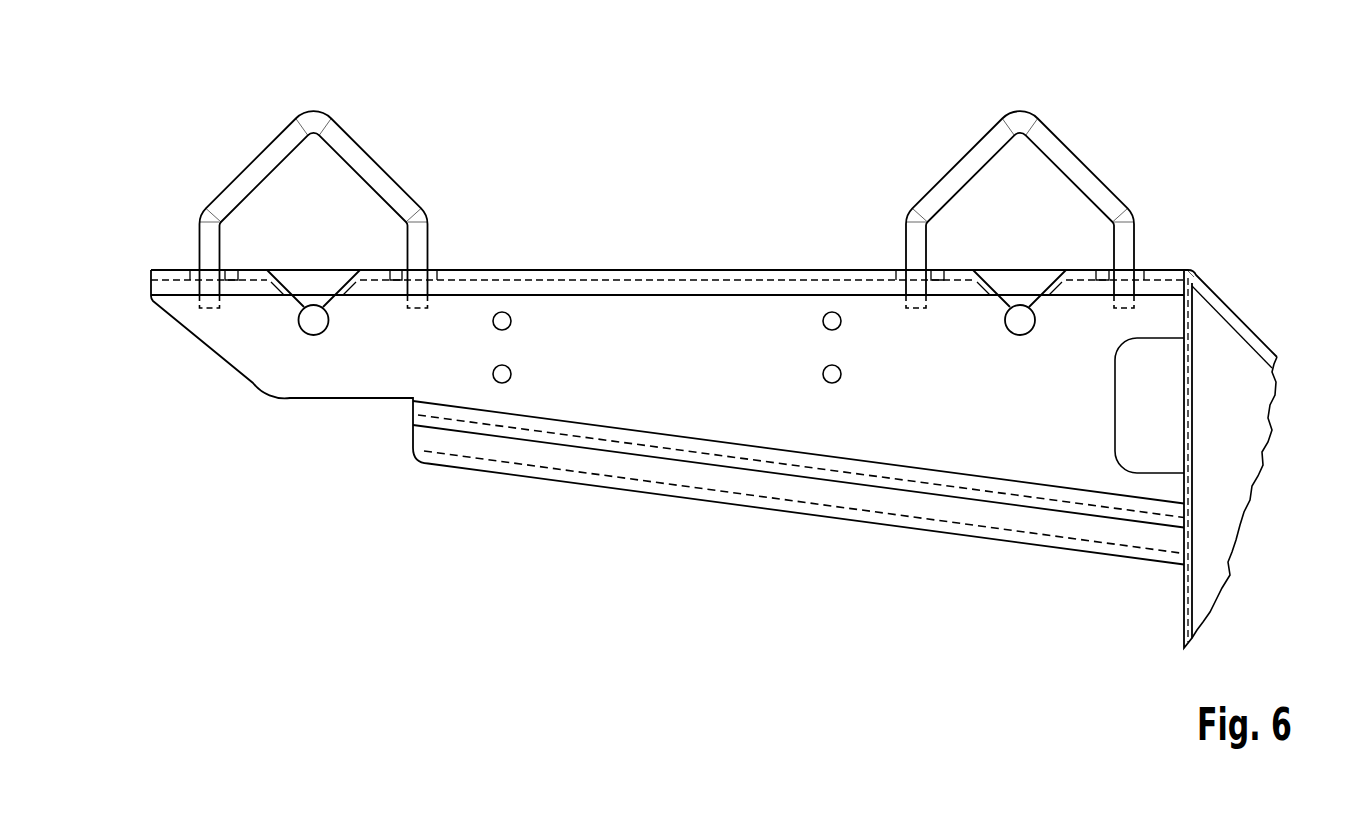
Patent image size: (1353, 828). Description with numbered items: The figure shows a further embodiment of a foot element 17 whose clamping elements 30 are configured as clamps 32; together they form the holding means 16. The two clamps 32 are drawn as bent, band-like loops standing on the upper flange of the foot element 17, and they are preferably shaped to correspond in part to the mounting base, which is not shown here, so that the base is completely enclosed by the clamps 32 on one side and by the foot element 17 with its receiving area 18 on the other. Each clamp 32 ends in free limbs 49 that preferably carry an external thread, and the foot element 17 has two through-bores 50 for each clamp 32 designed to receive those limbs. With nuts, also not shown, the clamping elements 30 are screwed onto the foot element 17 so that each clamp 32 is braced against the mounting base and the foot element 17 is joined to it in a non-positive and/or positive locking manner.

The holding means 16 is at (1248, 108).
The foot element 17 is at (861, 432).
The receiving area 18 is at (313, 286).
The clamping element 30 is at (666, 173).
The clamp 32 is at (314, 122).
The free limb 49 is at (208, 274).
The through-bore 50 is at (217, 275).